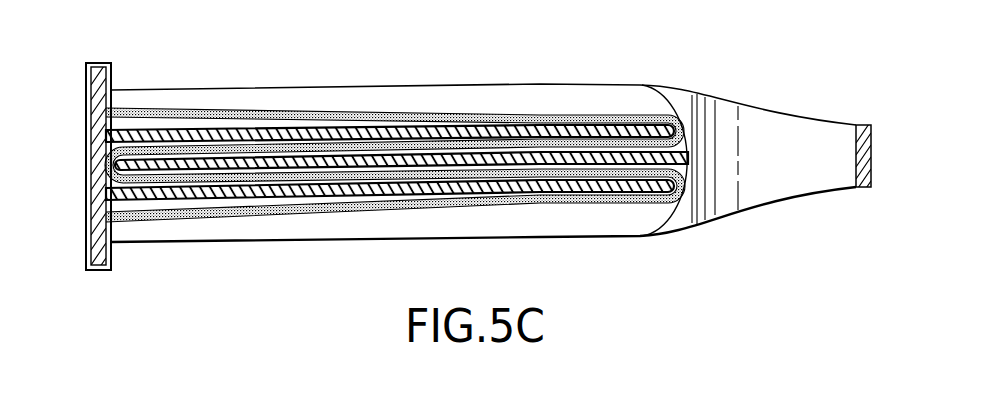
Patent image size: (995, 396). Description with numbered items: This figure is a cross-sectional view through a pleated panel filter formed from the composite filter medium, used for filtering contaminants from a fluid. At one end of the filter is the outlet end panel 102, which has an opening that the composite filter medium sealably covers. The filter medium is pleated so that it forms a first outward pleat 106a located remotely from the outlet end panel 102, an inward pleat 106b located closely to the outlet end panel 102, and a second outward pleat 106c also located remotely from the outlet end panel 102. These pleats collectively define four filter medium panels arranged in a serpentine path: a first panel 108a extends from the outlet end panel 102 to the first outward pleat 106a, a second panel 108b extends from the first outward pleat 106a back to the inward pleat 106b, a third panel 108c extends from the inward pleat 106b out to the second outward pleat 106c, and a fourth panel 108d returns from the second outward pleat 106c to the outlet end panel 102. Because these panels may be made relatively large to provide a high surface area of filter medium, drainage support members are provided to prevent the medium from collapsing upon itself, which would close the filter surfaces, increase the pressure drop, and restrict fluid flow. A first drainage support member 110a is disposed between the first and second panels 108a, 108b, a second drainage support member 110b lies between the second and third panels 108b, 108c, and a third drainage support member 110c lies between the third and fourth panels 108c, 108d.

The outlet end panel 102 is at (85, 252).
The first outward pleat 106a is at (681, 114).
The inward pleat 106b is at (104, 162).
The second outward pleat 106c is at (672, 202).
The first panel 108a is at (184, 110).
The second panel 108b is at (459, 146).
The third panel 108c is at (603, 203).
The fourth panel 108d is at (424, 205).
The first drainage support member 110a is at (324, 134).
The second drainage support member 110b is at (537, 160).
The third drainage support member 110c is at (194, 198).